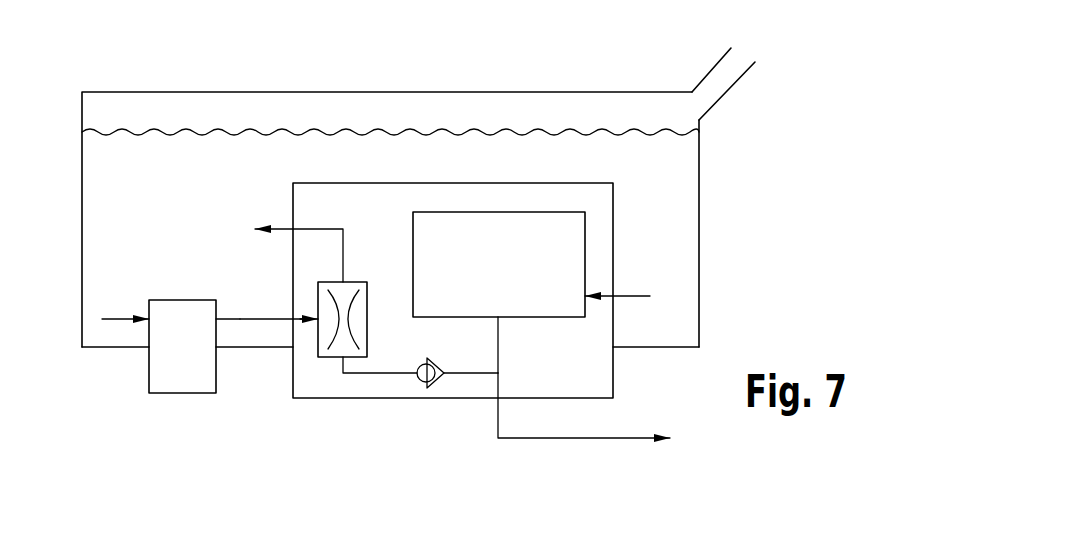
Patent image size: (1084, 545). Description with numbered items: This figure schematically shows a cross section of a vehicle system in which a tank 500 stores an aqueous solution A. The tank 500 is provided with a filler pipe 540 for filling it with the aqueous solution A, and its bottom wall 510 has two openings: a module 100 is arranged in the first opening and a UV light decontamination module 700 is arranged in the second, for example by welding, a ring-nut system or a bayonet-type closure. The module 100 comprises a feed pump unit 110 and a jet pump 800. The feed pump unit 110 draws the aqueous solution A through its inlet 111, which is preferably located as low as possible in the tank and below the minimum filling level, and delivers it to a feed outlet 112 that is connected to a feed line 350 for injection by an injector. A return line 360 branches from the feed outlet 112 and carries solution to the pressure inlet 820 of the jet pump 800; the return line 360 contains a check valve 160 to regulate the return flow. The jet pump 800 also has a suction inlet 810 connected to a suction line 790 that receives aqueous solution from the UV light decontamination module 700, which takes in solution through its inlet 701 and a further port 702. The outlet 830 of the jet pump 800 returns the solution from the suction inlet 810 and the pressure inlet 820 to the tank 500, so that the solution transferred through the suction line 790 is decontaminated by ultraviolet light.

The tank 500 is at (133, 72).
The bottom wall 510 is at (102, 348).
The filler pipe 540 is at (725, 73).
The aqueous solution A is at (668, 163).
The module 100 is at (613, 375).
The feed pump unit 110 is at (533, 212).
The inlet 111 is at (584, 295).
The feed outlet 112 is at (498, 316).
The feed line 350 is at (597, 440).
The check valve 160 is at (416, 383).
The return line 360 is at (475, 375).
The pressure inlet 820 is at (352, 374).
The outlet 830 is at (345, 242).
The jet pump 800 is at (369, 300).
The suction inlet 810 is at (304, 318).
The suction line 790 is at (270, 322).
The UV light decontamination module 700 is at (178, 300).
The inlet 701 is at (150, 320).
The pump outlet 702 is at (216, 320).